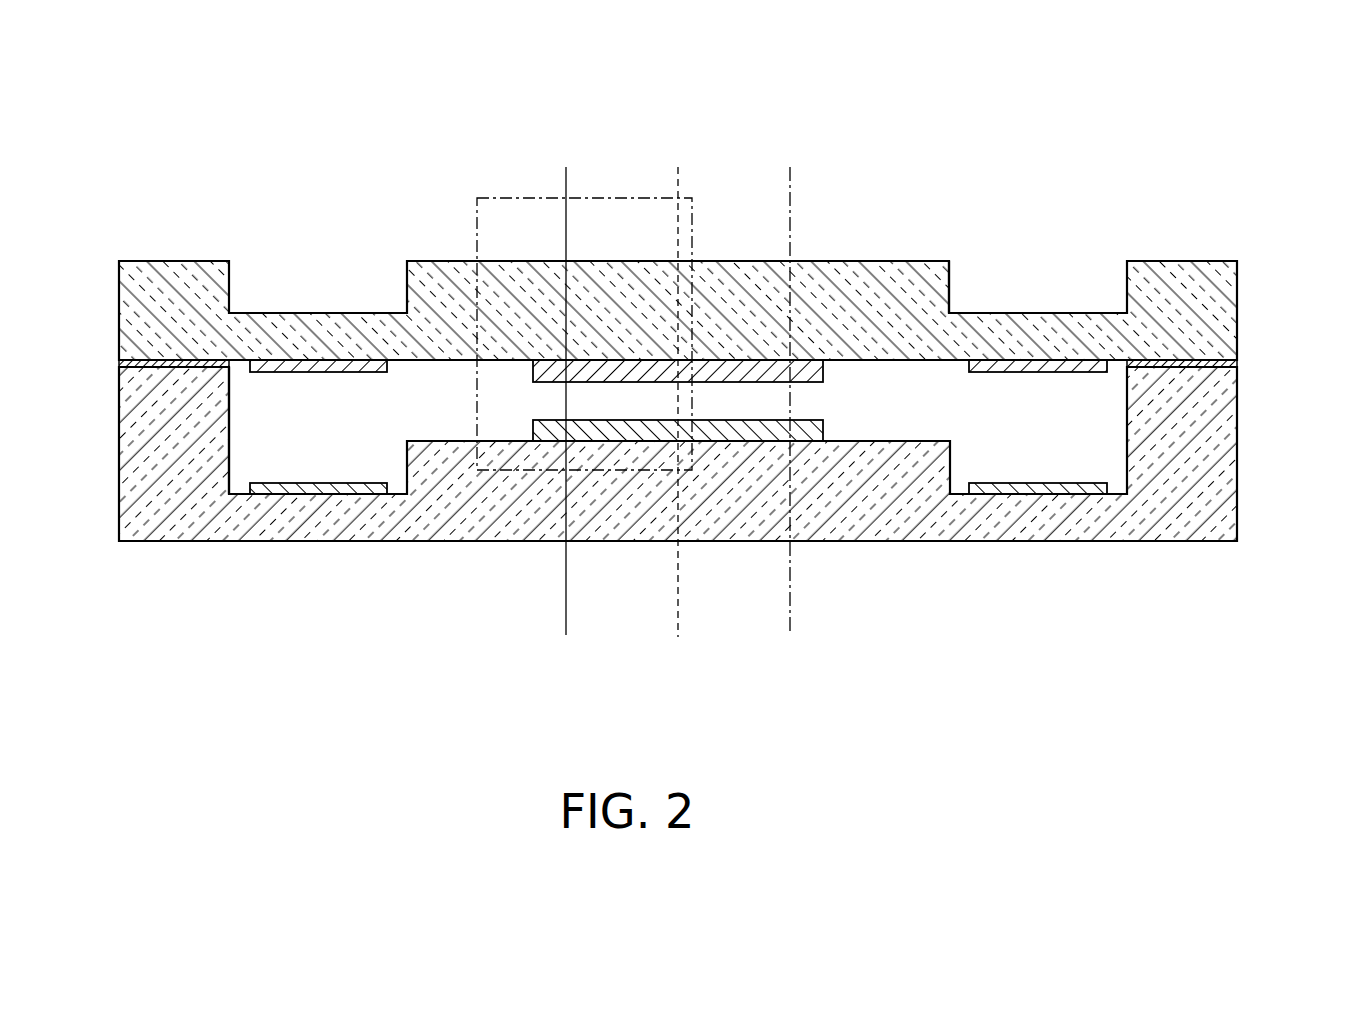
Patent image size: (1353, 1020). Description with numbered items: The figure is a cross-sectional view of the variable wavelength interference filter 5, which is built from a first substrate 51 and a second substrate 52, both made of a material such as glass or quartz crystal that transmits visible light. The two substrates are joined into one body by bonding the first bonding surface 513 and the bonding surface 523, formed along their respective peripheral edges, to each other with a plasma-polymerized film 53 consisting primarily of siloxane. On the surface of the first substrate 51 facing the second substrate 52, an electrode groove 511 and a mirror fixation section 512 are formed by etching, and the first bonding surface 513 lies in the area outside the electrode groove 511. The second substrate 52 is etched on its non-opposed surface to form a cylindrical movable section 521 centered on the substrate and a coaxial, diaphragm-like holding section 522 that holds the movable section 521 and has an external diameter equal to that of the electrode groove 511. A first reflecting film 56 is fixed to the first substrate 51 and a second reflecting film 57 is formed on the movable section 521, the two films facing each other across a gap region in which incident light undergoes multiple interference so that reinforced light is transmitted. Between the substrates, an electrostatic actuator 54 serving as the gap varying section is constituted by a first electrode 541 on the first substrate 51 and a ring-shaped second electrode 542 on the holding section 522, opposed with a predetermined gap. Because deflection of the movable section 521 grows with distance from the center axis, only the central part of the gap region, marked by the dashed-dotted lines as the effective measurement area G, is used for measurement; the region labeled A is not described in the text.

The variable wavelength interference filter 5 is at (1176, 141).
The first substrate 51 is at (724, 448).
The electrode groove 511 is at (229, 492).
The mirror fixation section 512 is at (425, 441).
The first bonding surface 513 is at (1204, 362).
The second substrate 52 is at (709, 320).
The movable section 521 is at (950, 273).
The holding section 522 is at (1064, 313).
The bonding surface 523 is at (1174, 366).
The plasma-polymerized film 53 is at (1238, 363).
The electrostatic actuator 54 is at (1074, 507).
The first electrode 541 is at (1057, 492).
The second electrode 542 is at (1090, 368).
The first reflecting film 56 is at (824, 426).
The second reflecting film 57 is at (824, 374).
The region A is at (513, 198).
The effective measurement area G is at (567, 612).